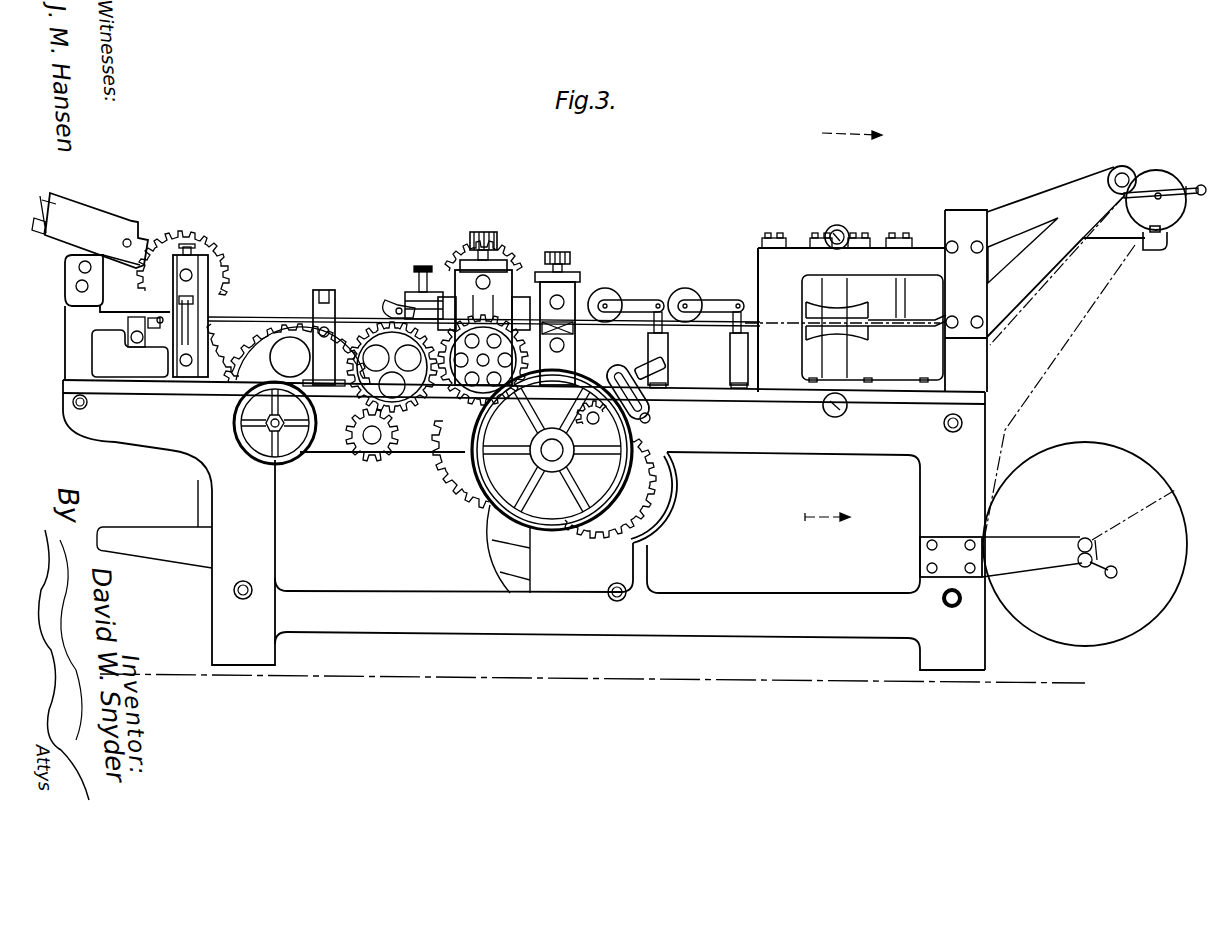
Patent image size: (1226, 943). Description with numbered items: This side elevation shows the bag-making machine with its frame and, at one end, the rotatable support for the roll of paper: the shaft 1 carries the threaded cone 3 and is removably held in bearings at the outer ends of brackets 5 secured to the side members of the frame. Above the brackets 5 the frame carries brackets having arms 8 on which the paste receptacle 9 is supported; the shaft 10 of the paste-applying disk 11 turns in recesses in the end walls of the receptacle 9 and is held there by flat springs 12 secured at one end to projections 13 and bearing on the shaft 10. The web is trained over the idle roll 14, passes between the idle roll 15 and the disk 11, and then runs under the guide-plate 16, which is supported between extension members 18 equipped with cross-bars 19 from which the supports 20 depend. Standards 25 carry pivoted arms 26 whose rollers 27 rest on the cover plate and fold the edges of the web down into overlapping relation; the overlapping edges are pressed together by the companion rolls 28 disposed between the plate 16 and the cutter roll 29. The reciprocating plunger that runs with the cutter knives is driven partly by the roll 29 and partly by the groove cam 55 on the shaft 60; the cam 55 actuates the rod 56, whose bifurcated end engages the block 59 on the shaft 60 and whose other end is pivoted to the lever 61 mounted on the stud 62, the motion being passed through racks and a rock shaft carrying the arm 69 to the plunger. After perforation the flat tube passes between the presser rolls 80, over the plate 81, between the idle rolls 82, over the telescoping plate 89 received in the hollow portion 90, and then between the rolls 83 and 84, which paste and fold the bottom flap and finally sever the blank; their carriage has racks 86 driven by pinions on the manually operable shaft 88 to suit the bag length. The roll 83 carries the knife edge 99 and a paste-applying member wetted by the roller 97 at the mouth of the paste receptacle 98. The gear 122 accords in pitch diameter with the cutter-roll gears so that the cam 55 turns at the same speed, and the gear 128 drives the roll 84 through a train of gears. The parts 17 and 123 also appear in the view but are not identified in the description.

The shaft 1 is at (1078, 548).
The cone 3 is at (574, 446).
The brackets 5 is at (843, 330).
The arms 8 is at (1158, 268).
The receptacle for paste 9 is at (1165, 211).
The shaft 10 is at (1170, 185).
The paste-applying disk 11 is at (1150, 178).
The flat springs 12 is at (1200, 190).
The projections 13 is at (1200, 196).
The idle roll 14 is at (1095, 275).
The idle roll 15 is at (1124, 166).
The guide-plate 16 is at (900, 330).
The bracket arm 17 is at (1066, 252).
The extension members 18 is at (876, 246).
The cross-bars 19 is at (786, 246).
The supports 20 is at (1060, 365).
The standards 25 is at (718, 352).
The arms 26 is at (670, 292).
The rollers 27 is at (558, 318).
The companion rolls 28 is at (522, 300).
The cutter roll 29 is at (465, 232).
The cam 55 is at (678, 490).
The rod 56 is at (832, 455).
The block 59 is at (633, 389).
The shaft 60 is at (645, 500).
The lever 61 is at (868, 338).
The stud or shaft 62 is at (845, 412).
The arm 69 is at (842, 298).
The presser rolls 80 is at (420, 286).
The plate 81 is at (377, 350).
The idle rolls 82 is at (364, 310).
The roll 83 is at (305, 452).
The roll 84 is at (213, 310).
The racks 86 is at (840, 228).
The manually operable shaft 88 is at (292, 356).
The plate 89 is at (158, 294).
The hollow portion 90 is at (300, 290).
The roller 97 is at (148, 232).
The paste receptacle 98 is at (90, 198).
The knife edge 99 is at (280, 312).
The gear 122 is at (637, 488).
The fly wheel 123 is at (552, 455).
The gear 128 is at (440, 440).